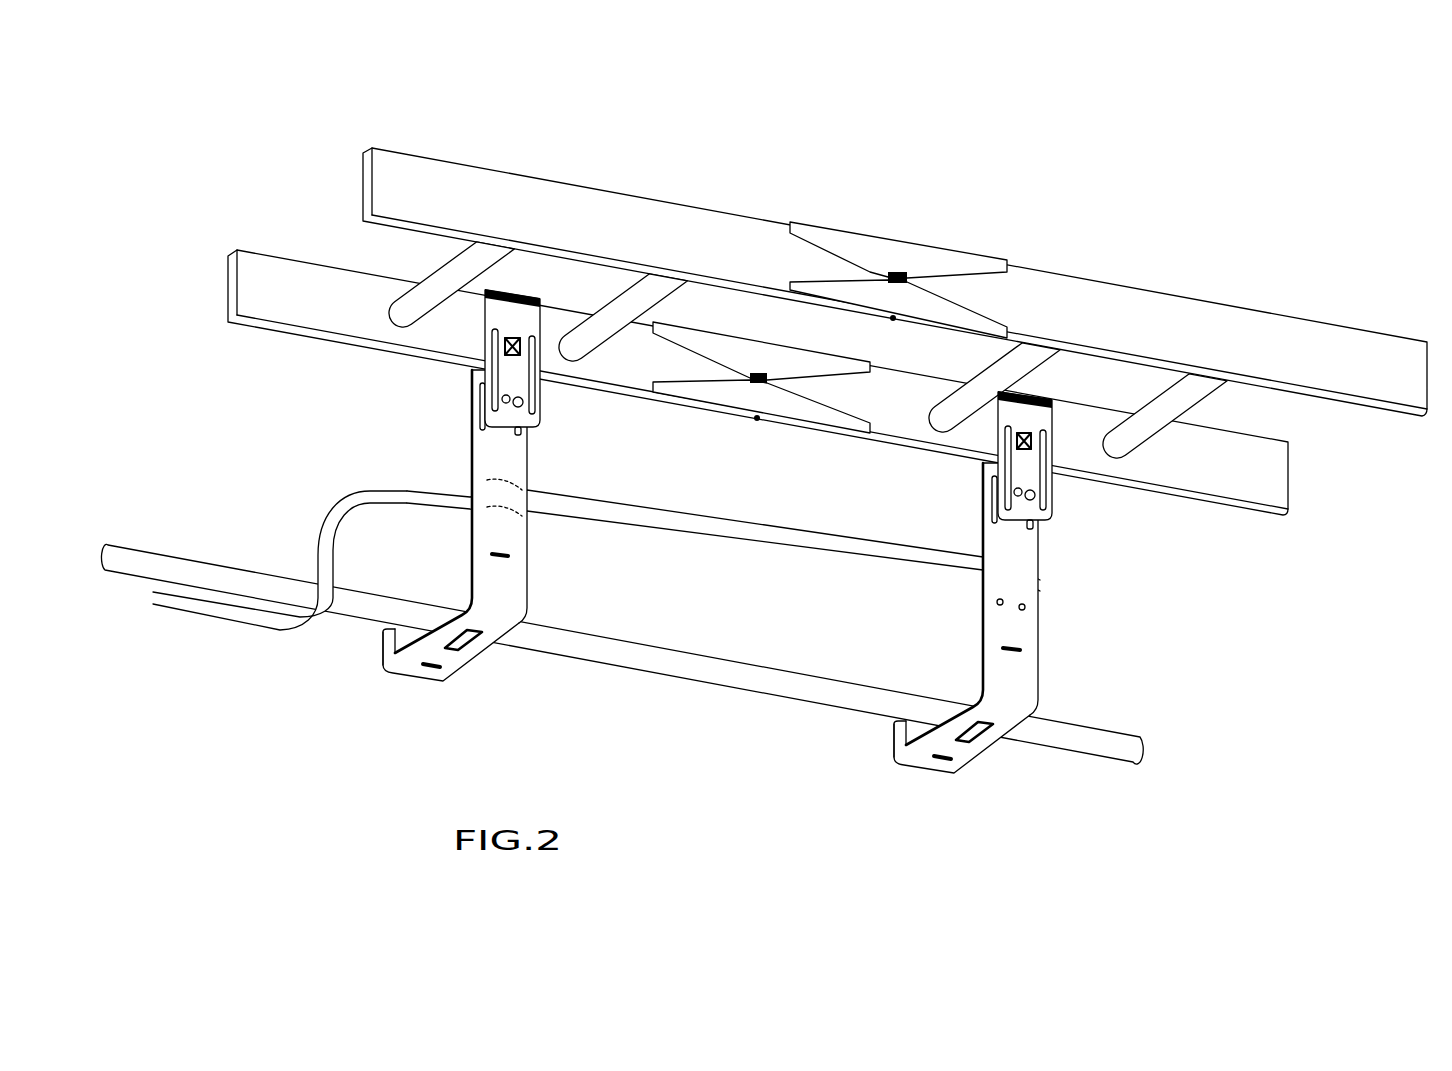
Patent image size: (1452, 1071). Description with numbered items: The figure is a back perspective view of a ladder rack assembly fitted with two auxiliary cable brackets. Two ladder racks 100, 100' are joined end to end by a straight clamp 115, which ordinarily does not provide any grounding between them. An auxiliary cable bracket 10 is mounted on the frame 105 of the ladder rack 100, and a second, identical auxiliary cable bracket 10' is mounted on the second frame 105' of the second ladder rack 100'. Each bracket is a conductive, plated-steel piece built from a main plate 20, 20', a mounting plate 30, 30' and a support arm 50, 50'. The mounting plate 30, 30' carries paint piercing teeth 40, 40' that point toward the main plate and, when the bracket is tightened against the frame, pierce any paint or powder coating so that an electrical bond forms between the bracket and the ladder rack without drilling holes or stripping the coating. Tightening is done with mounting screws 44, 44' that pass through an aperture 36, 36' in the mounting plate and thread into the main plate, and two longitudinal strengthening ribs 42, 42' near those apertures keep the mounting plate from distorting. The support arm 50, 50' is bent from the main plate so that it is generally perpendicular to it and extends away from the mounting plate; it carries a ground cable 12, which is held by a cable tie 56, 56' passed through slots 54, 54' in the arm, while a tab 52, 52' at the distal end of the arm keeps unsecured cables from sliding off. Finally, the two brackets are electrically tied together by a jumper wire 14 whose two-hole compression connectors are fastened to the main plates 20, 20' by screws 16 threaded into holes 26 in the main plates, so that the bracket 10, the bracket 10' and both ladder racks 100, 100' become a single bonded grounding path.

The auxiliary cable bracket 10 is at (1056, 618).
The second auxiliary cable bracket 10' is at (408, 525).
The ground cable 12 is at (638, 668).
The jumper wire 14 is at (722, 537).
The screws 16 is at (486, 486).
The main plate 20 is at (964, 604).
The main plate of second bracket 20' is at (425, 511).
The holes 26 is at (998, 604).
The mounting plate 30 is at (1089, 364).
The clip 30' is at (596, 286).
The aperture 36 is at (952, 460).
The clip body 36' is at (403, 358).
The paint piercing teeth 40 is at (1105, 480).
The paint piercing teeth of second bracket 40' is at (581, 392).
The strengthening ribs 42 is at (1043, 495).
The slots 42' is at (513, 406).
The mounting screw 44 is at (1090, 530).
The apertures 44' is at (560, 446).
The support arm 50 is at (962, 791).
The support arm of second bracket 50' is at (451, 701).
The tab 52 is at (837, 744).
The flange 52' is at (315, 666).
The slots 54 is at (1003, 746).
The fastener 54' is at (476, 663).
The cable tie 56 is at (1023, 774).
The slot 56' is at (516, 683).
The ladder rack 100 is at (1116, 320).
The second ladder rack 100' is at (516, 212).
The frame 105 is at (830, 354).
The second frame 105' is at (254, 218).
The straight clamp 115 is at (883, 250).